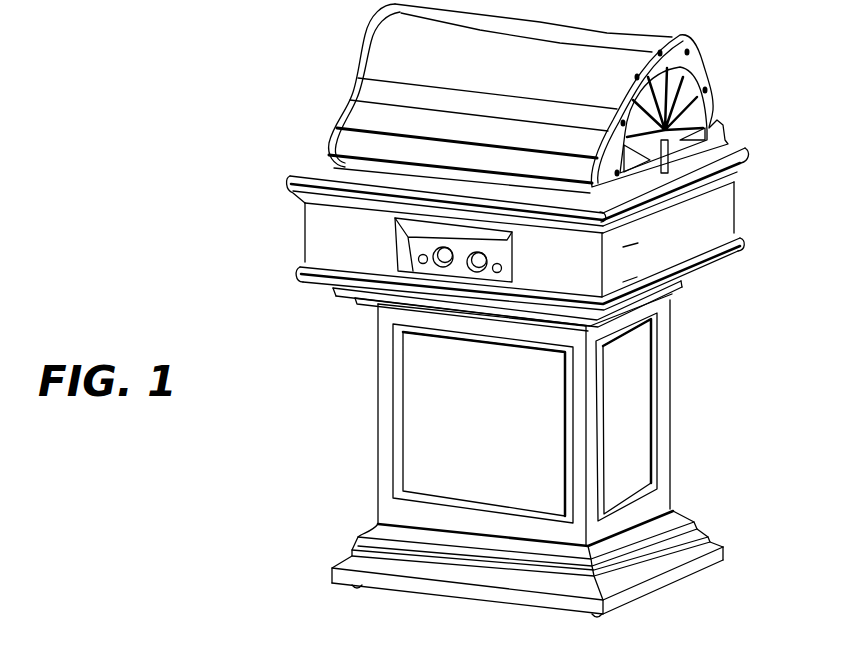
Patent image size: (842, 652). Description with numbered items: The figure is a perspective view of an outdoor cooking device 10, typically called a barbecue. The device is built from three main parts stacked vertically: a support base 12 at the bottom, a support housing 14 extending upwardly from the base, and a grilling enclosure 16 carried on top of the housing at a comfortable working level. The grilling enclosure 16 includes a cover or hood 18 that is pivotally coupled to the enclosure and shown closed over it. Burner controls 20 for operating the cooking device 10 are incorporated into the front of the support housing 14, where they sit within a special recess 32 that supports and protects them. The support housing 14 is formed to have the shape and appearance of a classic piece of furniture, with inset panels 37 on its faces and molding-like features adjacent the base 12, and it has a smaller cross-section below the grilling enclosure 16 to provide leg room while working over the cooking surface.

The outdoor cooking device 10 is at (754, 126).
The support base 12 is at (607, 612).
The support housing 14 is at (672, 380).
The grilling enclosure 16 is at (322, 170).
The cover or hood 18 is at (573, 23).
The controls 20 is at (380, 310).
The recess 32 is at (392, 264).
The inset panels 37 is at (418, 463).